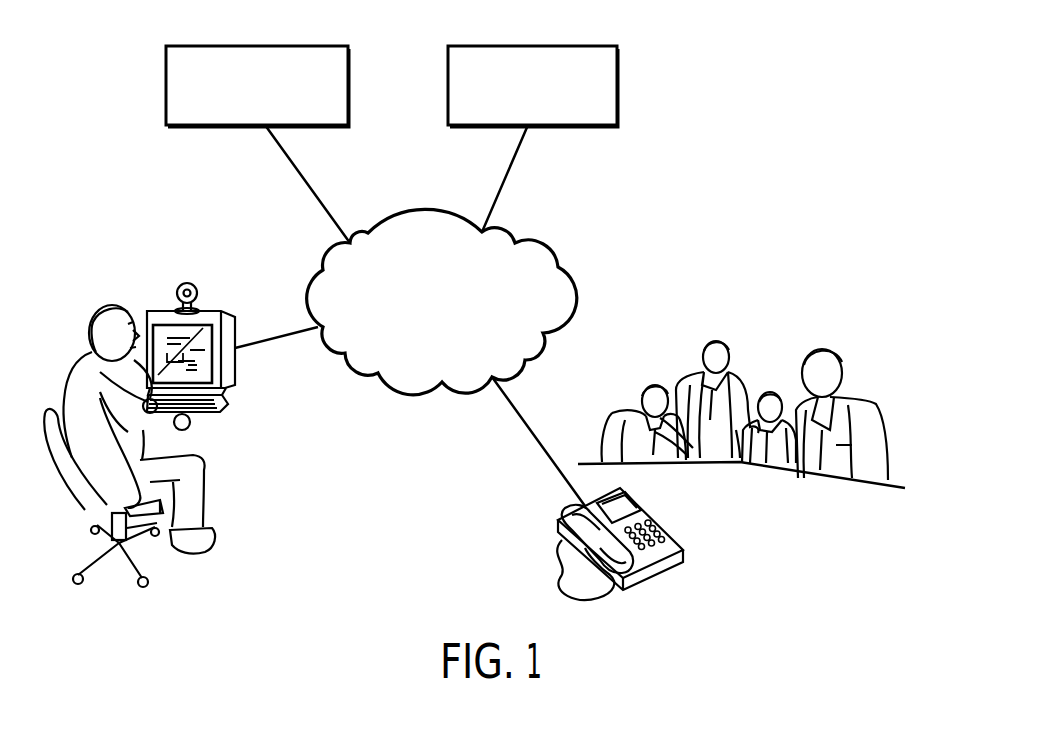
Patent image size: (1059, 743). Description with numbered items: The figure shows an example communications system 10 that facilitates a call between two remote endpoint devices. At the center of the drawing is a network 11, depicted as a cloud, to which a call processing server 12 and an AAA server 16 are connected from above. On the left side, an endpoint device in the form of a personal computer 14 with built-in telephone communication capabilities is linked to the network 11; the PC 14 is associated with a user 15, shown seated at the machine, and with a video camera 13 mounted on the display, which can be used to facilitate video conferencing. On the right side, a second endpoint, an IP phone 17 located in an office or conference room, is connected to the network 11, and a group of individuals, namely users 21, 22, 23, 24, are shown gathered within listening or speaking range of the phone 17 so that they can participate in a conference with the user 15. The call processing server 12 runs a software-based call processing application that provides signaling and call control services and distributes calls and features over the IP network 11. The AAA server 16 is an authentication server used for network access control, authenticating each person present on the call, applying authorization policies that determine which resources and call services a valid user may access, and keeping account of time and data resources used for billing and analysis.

The communications system 10 is at (790, 38).
The network 11 is at (428, 333).
The call processing server 12 is at (166, 76).
The video camera 13 is at (183, 282).
The personal computer 14 is at (152, 311).
The user 15 is at (78, 360).
The AAA server 16 is at (618, 87).
The IP phone 17 is at (668, 564).
The user 21 is at (650, 384).
The user 22 is at (715, 340).
The user 23 is at (771, 392).
The user 24 is at (829, 348).